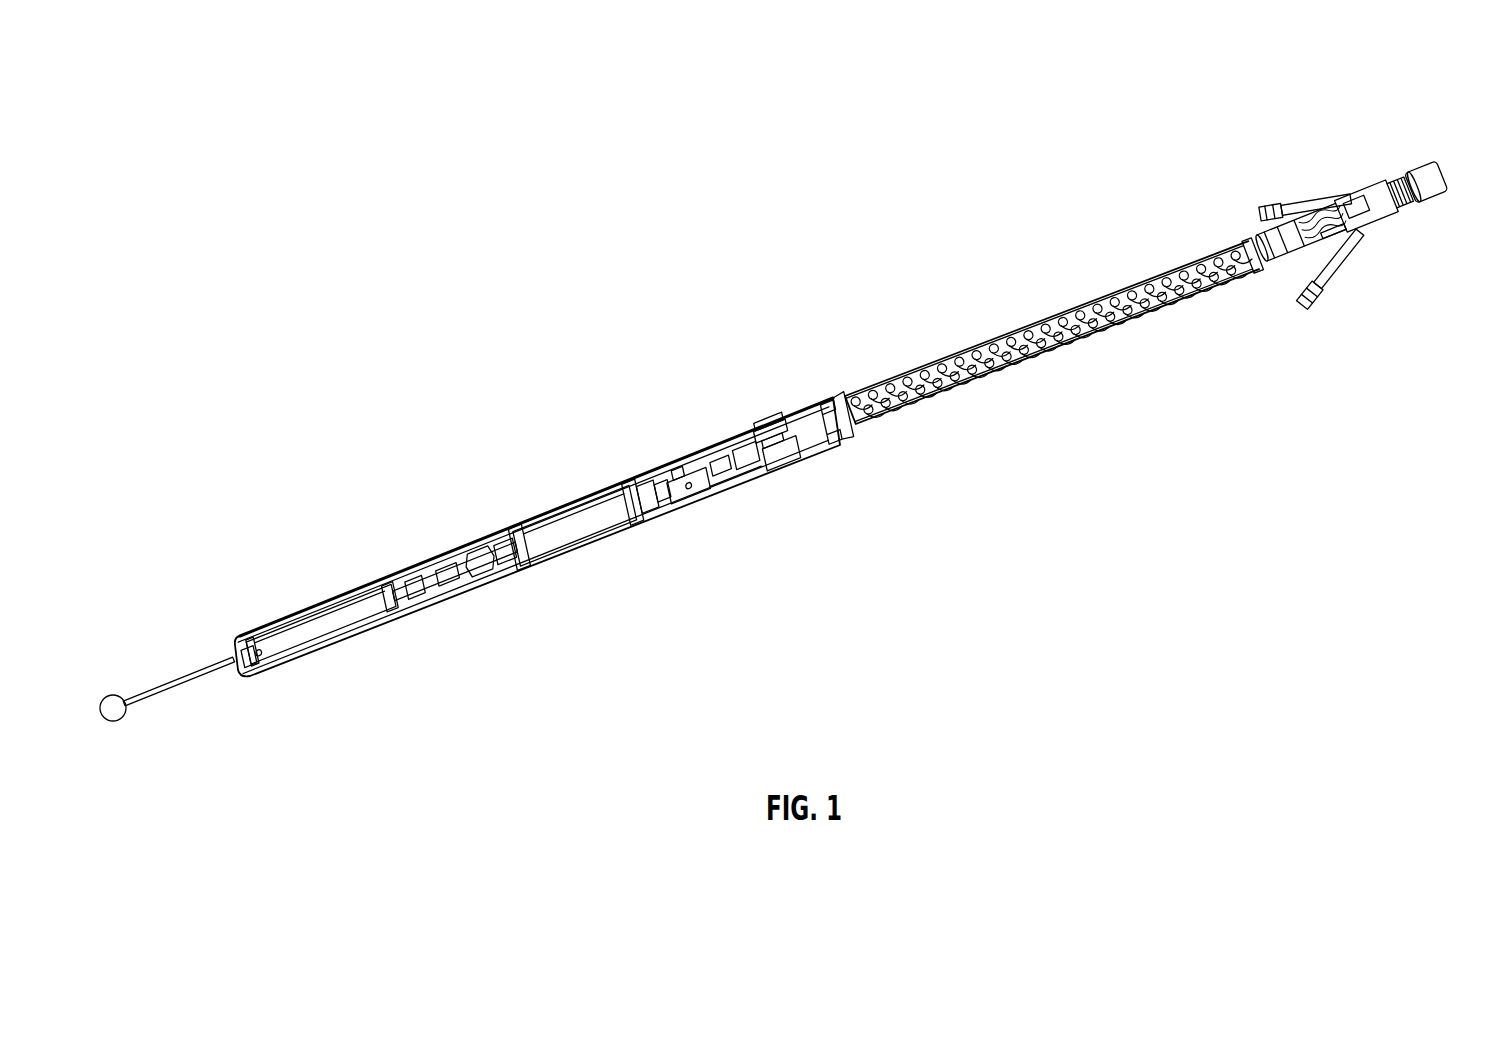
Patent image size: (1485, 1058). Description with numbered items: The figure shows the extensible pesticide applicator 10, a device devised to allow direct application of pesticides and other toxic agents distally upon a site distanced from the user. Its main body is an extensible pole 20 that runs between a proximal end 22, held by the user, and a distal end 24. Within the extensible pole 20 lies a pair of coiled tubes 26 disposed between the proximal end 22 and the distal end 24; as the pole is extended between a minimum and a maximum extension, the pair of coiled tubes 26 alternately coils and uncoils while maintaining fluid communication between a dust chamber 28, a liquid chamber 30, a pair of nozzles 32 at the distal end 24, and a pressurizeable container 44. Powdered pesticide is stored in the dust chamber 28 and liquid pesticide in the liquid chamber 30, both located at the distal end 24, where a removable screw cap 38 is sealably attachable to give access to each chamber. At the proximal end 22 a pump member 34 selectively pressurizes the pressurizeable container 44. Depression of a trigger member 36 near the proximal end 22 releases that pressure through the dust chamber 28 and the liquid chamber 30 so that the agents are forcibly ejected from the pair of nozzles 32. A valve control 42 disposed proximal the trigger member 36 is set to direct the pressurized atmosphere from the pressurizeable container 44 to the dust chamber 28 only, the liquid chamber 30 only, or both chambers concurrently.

The extensible pesticide applicator 10 is at (784, 426).
The extensible pole 20 is at (950, 362).
The proximal end 22 is at (315, 672).
The distal end 24 is at (1390, 182).
The pair of coiled tubes 26 is at (1070, 342).
The dust chamber 28 is at (1333, 238).
The liquid chamber 30 is at (1322, 216).
The pair of nozzles 32 is at (1267, 205).
The pump member 34 is at (300, 632).
The trigger member 36 is at (679, 515).
The removable screw cap 38 is at (1420, 170).
The valve control 42 is at (770, 427).
The pressurizeable container 44 is at (580, 528).